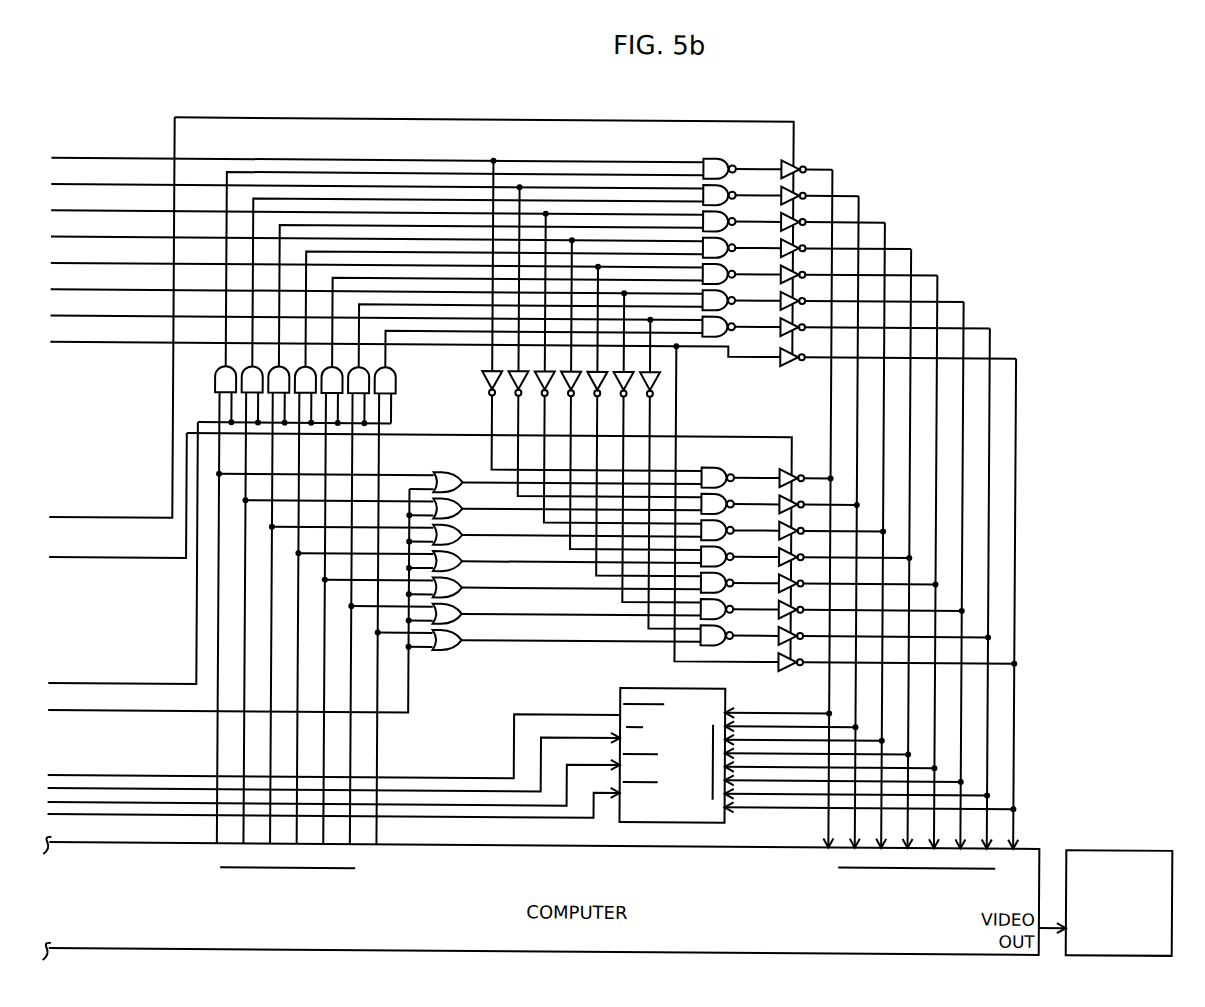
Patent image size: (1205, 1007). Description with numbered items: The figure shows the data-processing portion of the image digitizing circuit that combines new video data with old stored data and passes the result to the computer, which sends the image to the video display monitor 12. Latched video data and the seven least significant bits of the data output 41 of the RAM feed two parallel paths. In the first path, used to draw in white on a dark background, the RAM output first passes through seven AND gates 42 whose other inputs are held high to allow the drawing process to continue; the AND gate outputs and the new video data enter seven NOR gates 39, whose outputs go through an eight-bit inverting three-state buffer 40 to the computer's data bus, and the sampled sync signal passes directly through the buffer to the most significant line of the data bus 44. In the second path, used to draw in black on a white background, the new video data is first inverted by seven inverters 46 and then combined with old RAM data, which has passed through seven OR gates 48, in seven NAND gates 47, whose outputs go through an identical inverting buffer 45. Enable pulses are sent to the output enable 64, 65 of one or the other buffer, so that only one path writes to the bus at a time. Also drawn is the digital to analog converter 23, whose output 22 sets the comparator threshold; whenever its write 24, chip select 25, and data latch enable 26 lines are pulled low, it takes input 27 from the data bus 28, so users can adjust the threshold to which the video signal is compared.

The video display monitor 12 is at (1138, 855).
The output of digital to analog converter 22 is at (610, 708).
The digital to analog converter 23 is at (630, 688).
The write line 24 is at (610, 734).
The chip select line 25 is at (610, 762).
The data latch enable line 26 is at (610, 789).
The input of digital to analog converter 27 is at (712, 782).
The data bus 28 is at (866, 864).
The NOR gates 39 is at (723, 163).
The inverting three-state buffer 40 is at (788, 162).
The data output of RAM 41 is at (256, 870).
The AND gates 42 is at (220, 372).
The data bus line 44 is at (1018, 830).
The inverting three-state buffer 45 is at (789, 470).
The inverters 46 is at (490, 373).
The NAND gates 47 is at (737, 470).
The OR gates 48 is at (460, 477).
The output enable 64 is at (797, 158).
The output enable 65 is at (762, 432).